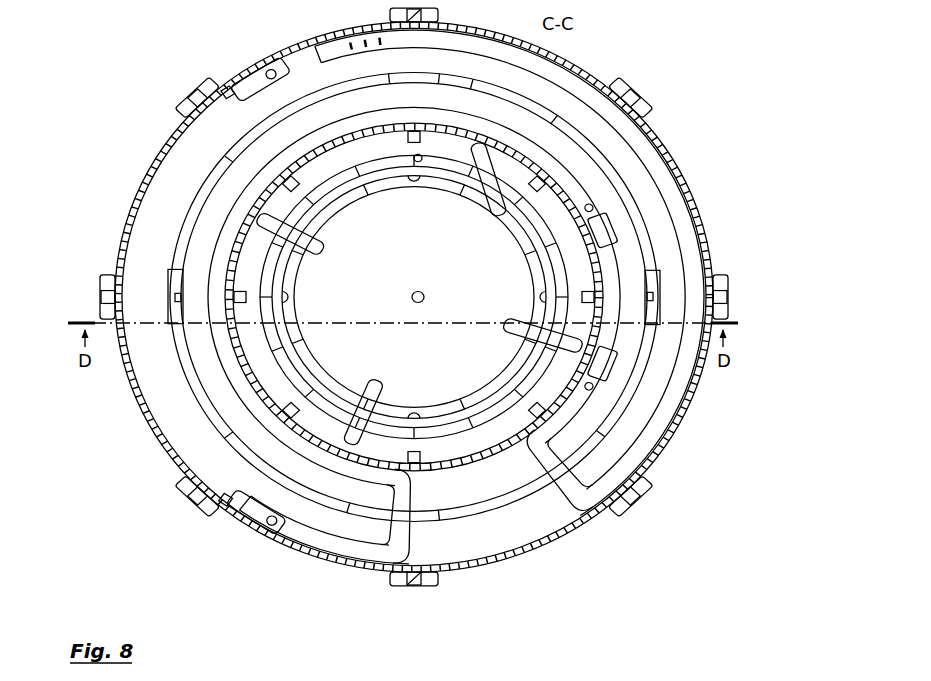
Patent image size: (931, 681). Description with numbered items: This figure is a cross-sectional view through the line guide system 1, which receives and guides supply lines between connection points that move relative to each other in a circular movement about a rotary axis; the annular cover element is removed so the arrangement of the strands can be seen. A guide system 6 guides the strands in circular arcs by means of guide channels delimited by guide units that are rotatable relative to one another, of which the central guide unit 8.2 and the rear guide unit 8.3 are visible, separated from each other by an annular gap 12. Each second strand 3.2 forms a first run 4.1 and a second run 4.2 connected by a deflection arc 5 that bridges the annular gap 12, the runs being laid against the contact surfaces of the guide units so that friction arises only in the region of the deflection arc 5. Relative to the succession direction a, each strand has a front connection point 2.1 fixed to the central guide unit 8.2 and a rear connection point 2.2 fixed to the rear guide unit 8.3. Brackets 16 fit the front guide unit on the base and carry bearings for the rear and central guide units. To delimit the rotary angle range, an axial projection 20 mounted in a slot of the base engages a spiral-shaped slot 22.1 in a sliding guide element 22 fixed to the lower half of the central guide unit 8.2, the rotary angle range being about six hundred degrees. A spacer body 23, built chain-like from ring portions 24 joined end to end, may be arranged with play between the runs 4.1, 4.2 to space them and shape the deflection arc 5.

The line guide system 1 is at (140, 46).
The front connection point 2.1 is at (603, 233).
The rear connection point 2.2 is at (253, 72).
The second strand 3.2 is at (656, 130).
The first run 4.1 is at (652, 153).
The second run 4.2 is at (573, 182).
The deflection arc 5 is at (404, 533).
The guide system 6 is at (215, 68).
The central guide unit 8.2 is at (603, 270).
The rear guide unit 8.3 is at (712, 221).
The annular gap 12 is at (653, 238).
The brackets 16 is at (729, 304).
The projection 20 is at (421, 155).
The sliding guide element 22 is at (261, 207).
The slot 22.1 is at (300, 262).
The spacer body 23 is at (679, 381).
The ring portion 24 is at (644, 428).
The succession direction a is at (343, 43).